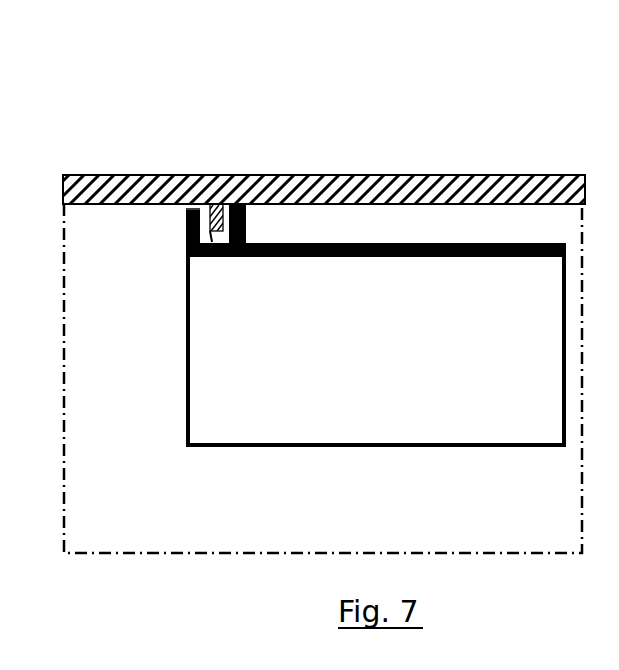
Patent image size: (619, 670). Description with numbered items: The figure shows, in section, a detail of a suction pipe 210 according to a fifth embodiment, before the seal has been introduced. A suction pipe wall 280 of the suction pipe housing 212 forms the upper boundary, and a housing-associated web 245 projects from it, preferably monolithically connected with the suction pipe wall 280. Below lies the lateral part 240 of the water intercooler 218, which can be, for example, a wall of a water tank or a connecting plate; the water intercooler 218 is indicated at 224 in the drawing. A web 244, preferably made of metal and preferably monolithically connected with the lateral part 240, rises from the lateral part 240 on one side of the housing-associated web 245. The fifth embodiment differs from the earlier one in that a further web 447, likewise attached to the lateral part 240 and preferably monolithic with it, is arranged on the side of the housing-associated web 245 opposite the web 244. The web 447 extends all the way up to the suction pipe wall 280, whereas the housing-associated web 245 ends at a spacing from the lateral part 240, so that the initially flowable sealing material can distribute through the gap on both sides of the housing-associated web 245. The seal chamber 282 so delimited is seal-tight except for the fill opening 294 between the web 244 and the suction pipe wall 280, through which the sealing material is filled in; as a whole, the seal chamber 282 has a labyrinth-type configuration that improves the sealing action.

The suction pipe 210 is at (133, 100).
The suction pipe housing 212 is at (531, 168).
The suction pipe wall 280 is at (440, 183).
The housing-associated web 245 is at (225, 177).
The web 244 is at (187, 229).
The further web 447 is at (247, 224).
The fill opening 294 is at (186, 209).
The seal chamber 282 is at (213, 258).
The lateral part 240 is at (525, 258).
The water intercooler 218 is at (522, 455).
The cavity 224 is at (438, 421).